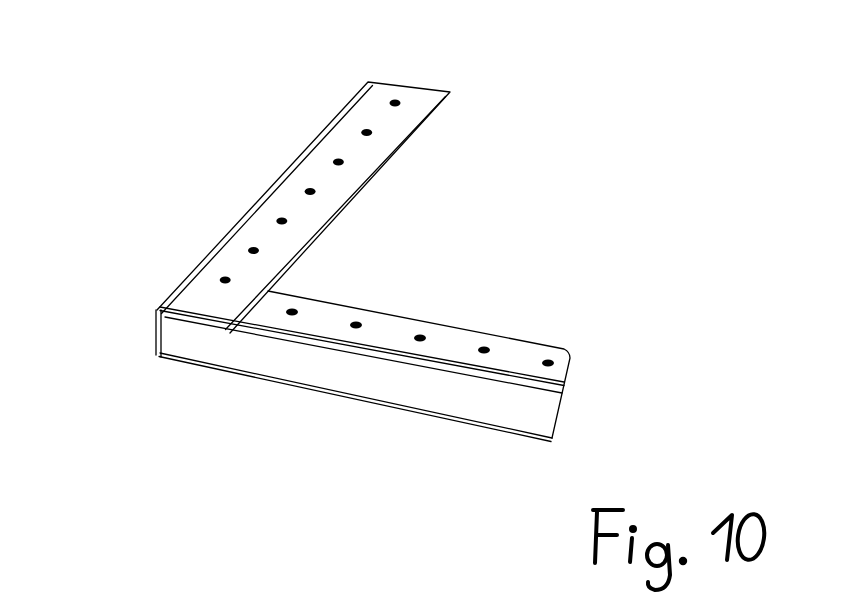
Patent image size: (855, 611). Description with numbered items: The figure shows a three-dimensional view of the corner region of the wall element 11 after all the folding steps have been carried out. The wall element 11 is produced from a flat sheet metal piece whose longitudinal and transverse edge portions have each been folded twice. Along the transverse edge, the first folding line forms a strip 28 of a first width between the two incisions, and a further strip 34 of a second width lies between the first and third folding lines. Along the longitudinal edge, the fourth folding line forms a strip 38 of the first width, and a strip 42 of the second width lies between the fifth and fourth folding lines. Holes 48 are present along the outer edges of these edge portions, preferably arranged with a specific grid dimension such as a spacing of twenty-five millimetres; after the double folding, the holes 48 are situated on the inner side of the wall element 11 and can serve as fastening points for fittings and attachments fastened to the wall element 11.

The wall element 11 is at (262, 124).
The strip 28 is at (383, 328).
The strip 34 is at (540, 413).
The strip 38 is at (368, 158).
The strip 42 is at (153, 333).
The holes 48 is at (485, 346).